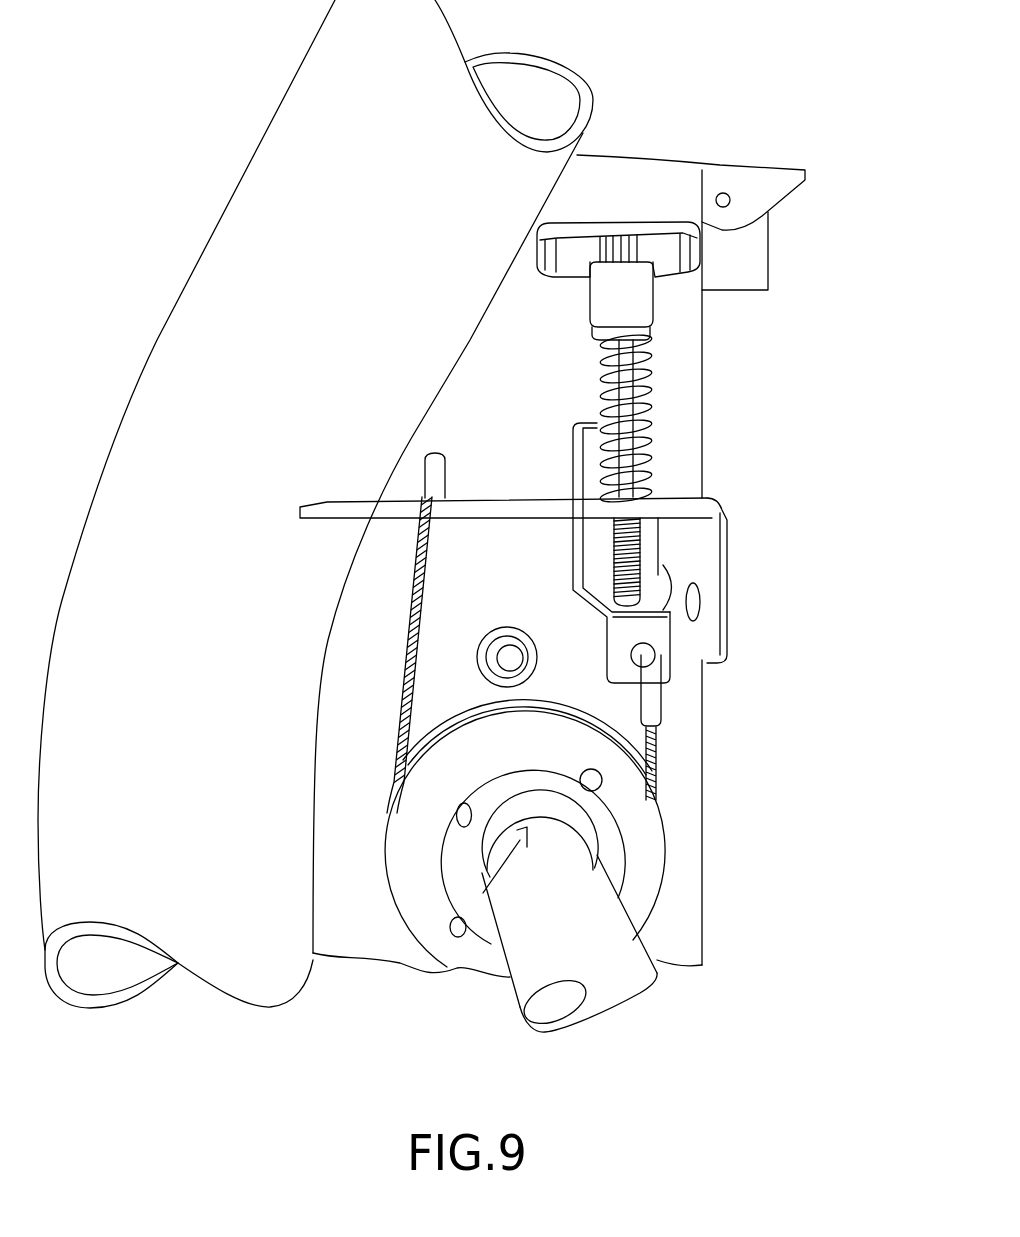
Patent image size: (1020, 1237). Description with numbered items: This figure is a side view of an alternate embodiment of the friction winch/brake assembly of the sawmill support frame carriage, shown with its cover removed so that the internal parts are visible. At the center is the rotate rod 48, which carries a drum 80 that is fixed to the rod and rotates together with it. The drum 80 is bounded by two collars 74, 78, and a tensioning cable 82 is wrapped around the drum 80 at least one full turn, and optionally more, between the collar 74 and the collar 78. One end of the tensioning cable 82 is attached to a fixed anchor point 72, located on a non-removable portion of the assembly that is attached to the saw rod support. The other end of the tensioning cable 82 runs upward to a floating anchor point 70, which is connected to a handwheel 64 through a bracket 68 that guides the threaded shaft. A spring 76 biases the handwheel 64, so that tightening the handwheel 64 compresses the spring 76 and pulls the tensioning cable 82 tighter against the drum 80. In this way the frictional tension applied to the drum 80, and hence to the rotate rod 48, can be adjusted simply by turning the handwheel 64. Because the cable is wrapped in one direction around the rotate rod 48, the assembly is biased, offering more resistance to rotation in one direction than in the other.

The rotate rod 48 is at (580, 937).
The handwheel 64 is at (688, 248).
The bracket with screw 68 is at (640, 552).
The floating anchor point 70 is at (647, 632).
The fixed anchor point 72 is at (417, 500).
The collar 74 is at (415, 820).
The spring 76 is at (655, 413).
The collar 78 is at (450, 722).
The drum 80 is at (407, 748).
The tensioning cable 82 is at (653, 750).